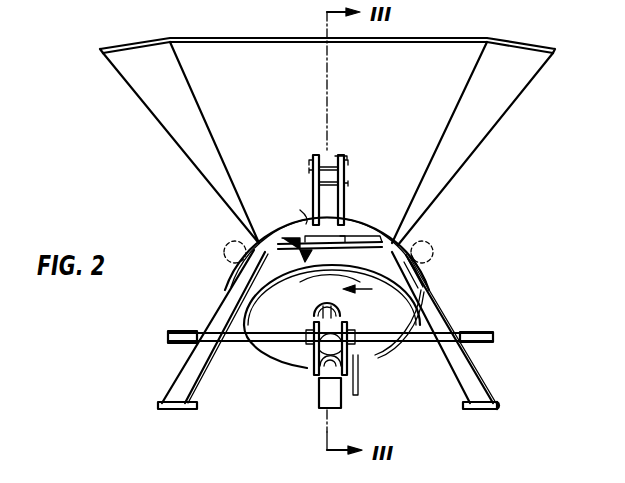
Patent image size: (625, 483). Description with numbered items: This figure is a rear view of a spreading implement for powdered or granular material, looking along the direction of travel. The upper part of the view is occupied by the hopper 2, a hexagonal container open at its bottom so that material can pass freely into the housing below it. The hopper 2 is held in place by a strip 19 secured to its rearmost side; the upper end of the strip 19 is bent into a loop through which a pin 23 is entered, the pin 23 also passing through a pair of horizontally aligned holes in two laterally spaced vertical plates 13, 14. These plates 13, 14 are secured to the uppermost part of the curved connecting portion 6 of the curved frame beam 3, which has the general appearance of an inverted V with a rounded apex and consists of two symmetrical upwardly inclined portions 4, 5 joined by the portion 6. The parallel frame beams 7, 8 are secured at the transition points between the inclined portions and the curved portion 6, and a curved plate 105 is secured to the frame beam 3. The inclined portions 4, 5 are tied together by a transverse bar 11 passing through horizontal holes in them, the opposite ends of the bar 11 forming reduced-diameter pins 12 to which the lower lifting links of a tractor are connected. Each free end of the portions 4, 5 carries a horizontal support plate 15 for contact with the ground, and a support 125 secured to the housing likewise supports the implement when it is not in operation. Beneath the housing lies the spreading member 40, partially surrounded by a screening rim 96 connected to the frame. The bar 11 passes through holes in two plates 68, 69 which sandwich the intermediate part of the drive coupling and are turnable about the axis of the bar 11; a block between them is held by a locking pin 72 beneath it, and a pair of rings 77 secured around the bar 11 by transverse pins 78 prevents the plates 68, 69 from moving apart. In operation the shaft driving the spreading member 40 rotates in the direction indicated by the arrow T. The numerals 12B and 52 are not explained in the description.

The hopper 2 is at (480, 130).
The curved frame beam 3 is at (432, 268).
The upwardly inclined portion 4 is at (440, 302).
The upwardly inclined portion 5 is at (230, 292).
The curved connecting portion 6 is at (306, 212).
The frame beam 7 is at (236, 245).
The frame beam 8 is at (418, 248).
The transverse bar 11 is at (256, 338).
The pin 12 is at (172, 336).
The bracket tab 12B is at (348, 184).
The vertical plate 13 is at (312, 156).
The vertical plate 14 is at (341, 155).
The horizontal support plate 15 is at (195, 406).
The strip 19 is at (344, 208).
The pin 23 is at (309, 168).
The spreading member 40 is at (265, 354).
The bearing 52 is at (324, 308).
The plate 68 is at (312, 325).
The plate 69 is at (345, 326).
The locking pin 72 is at (358, 380).
The ring 77 is at (358, 328).
The transverse pin 78 is at (312, 348).
The screening rim 96 is at (395, 352).
The curved plate 105 is at (368, 236).
The support 125 is at (318, 400).
The arrow T is at (364, 289).